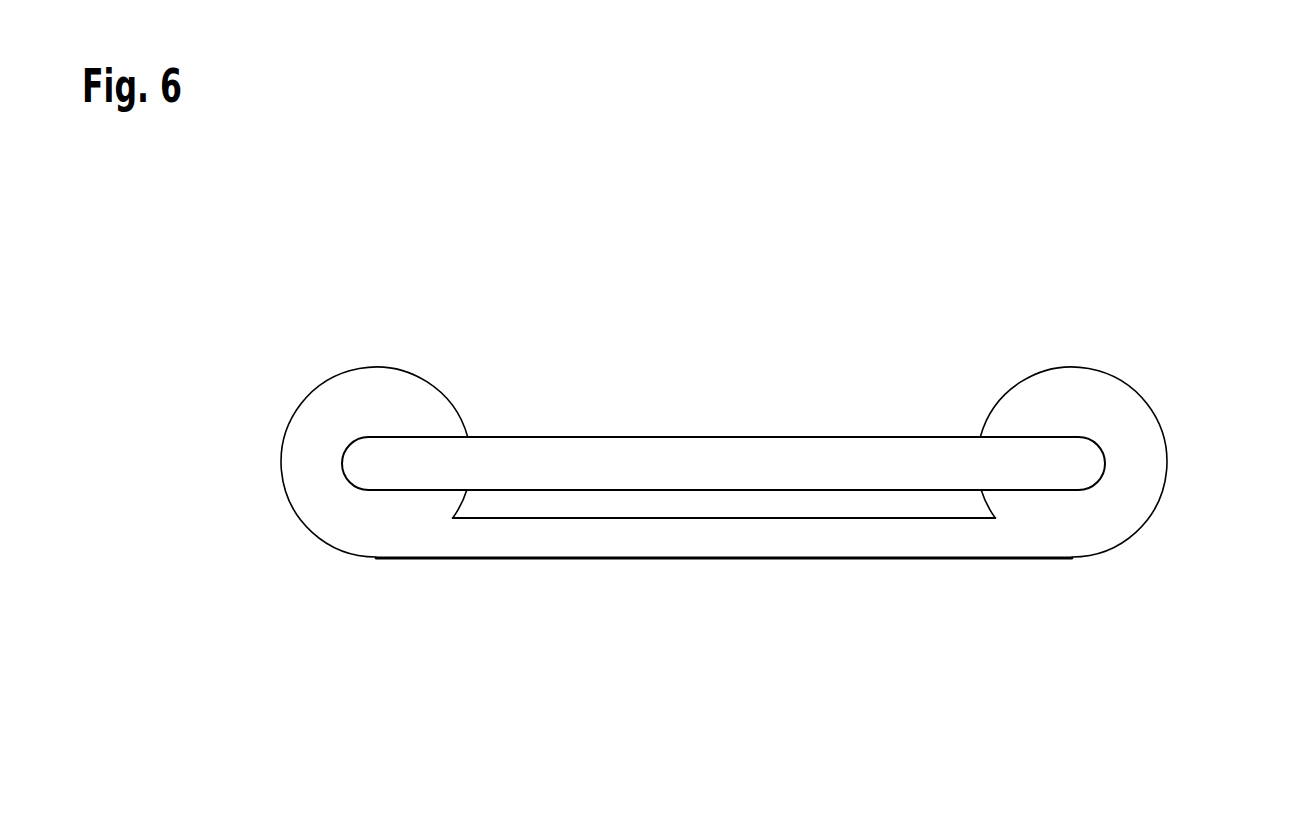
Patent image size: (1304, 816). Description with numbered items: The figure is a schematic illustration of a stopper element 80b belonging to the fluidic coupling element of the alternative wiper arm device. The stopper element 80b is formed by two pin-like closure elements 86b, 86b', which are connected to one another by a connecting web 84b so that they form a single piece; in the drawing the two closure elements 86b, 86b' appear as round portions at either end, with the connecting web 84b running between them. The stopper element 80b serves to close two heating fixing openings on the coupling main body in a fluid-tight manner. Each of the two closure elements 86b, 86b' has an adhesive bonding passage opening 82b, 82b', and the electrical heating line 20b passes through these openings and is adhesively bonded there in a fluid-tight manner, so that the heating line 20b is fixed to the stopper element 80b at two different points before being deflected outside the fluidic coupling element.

The electrical heating line 20b is at (810, 452).
The stopper element 80b is at (723, 522).
The adhesive bonding passage opening 82b is at (299, 400).
The adhesive bonding passage opening 82b' is at (1151, 400).
The connecting web 84b is at (692, 537).
The closure element 86b is at (313, 462).
The closure element 86b' is at (1134, 462).